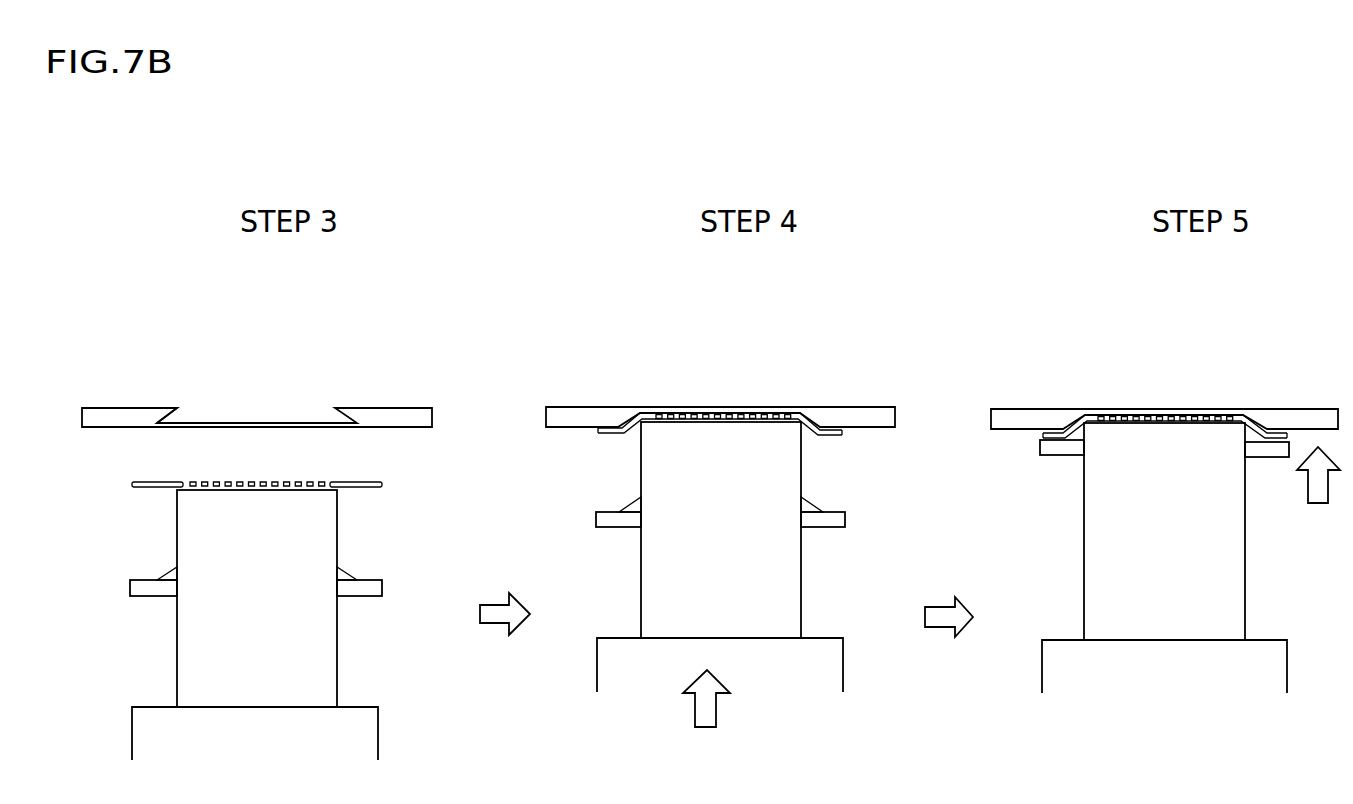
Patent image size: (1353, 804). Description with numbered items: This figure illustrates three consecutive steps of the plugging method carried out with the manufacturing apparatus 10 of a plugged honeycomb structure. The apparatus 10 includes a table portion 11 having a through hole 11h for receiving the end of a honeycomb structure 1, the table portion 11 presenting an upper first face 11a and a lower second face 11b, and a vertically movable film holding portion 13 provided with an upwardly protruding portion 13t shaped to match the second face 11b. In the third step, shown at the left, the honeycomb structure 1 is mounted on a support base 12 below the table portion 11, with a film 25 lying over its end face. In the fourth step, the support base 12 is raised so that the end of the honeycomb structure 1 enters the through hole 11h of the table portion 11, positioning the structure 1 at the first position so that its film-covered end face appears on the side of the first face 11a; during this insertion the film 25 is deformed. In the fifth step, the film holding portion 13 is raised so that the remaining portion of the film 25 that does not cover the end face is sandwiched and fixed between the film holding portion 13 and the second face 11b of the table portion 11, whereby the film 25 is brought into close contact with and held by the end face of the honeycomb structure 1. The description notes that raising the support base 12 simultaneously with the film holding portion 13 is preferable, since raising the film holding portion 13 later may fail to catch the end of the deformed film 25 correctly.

The honeycomb structure 1 is at (358, 644).
The manufacturing apparatus 10 is at (333, 343).
The table portion 11 is at (392, 414).
The first face 11a is at (114, 408).
The second face 11b is at (97, 429).
The through hole 11h is at (177, 418).
The support base 12 is at (365, 737).
The film holding portion 13 is at (382, 590).
The protruding portion 13t is at (168, 568).
The film 25 is at (372, 481).